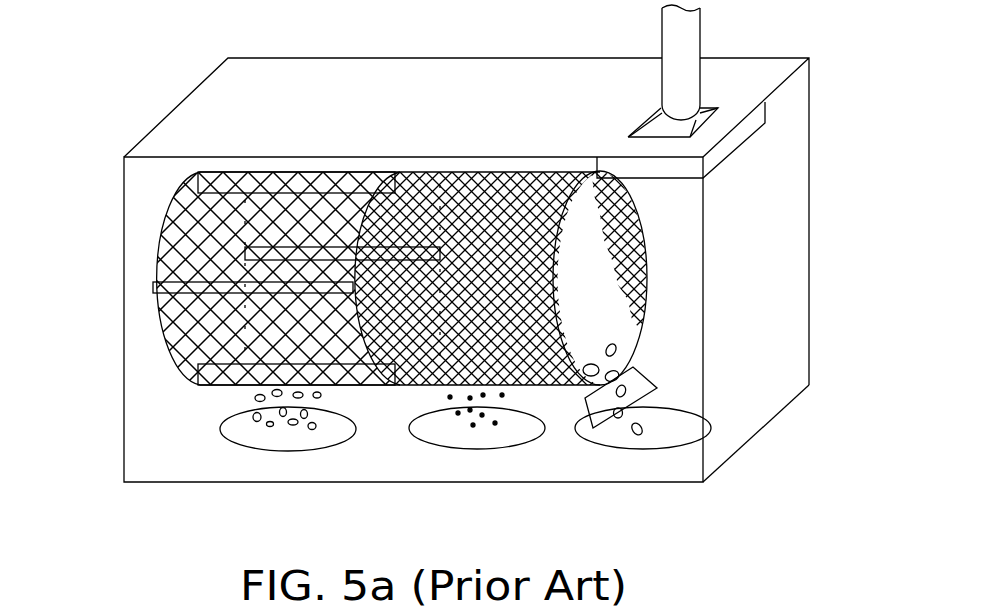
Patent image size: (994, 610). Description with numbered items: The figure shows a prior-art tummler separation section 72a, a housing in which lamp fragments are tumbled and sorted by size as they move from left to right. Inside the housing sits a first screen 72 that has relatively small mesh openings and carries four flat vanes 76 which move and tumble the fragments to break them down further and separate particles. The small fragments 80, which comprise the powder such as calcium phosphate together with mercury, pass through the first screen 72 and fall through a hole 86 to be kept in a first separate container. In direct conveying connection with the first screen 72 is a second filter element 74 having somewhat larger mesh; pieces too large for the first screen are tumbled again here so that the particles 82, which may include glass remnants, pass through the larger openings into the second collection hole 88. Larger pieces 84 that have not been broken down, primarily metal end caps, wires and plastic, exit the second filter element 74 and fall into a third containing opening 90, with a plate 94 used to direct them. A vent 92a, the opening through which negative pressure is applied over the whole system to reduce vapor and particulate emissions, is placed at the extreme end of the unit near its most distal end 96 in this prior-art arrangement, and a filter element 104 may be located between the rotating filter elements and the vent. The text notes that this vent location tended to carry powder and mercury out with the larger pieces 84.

The first screen 72 is at (303, 172).
The tummler separation section 72a is at (124, 422).
The second filter element 74 is at (481, 172).
The flat vanes 76 is at (237, 353).
The small fragments 80 is at (268, 428).
The particles 82 is at (473, 428).
The larger pieces 84 is at (635, 420).
The hole 86 is at (318, 451).
The second collection hole 88 is at (515, 449).
The third containing opening 90 is at (667, 452).
The vent 92a is at (662, 24).
The plate 94 is at (605, 430).
The most distal end 96 is at (753, 433).
The filter element 104 is at (743, 130).